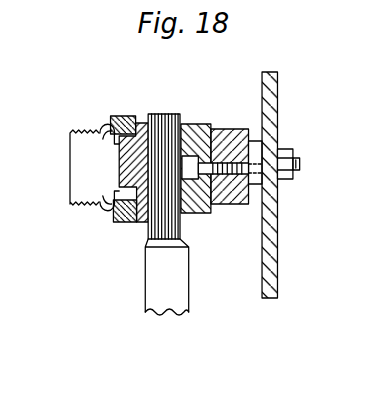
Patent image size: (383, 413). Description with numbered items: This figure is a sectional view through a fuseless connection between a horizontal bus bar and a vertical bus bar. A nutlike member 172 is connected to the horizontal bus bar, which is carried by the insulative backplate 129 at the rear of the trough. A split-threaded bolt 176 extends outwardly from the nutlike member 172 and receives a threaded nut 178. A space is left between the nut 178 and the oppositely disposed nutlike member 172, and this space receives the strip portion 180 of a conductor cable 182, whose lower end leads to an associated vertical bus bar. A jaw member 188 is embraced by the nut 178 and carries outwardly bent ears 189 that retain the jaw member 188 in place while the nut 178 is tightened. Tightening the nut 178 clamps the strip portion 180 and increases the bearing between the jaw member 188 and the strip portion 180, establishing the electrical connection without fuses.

The insulative backplate 129 is at (278, 242).
The nutlike member 172 is at (193, 122).
The split-threaded bolt 176 is at (67, 172).
The nut 178 is at (114, 116).
The strip portion 180 is at (163, 217).
The conductor cable 182 is at (167, 280).
The jaw member 188 is at (138, 213).
The outwardly bent ears 189 is at (102, 213).